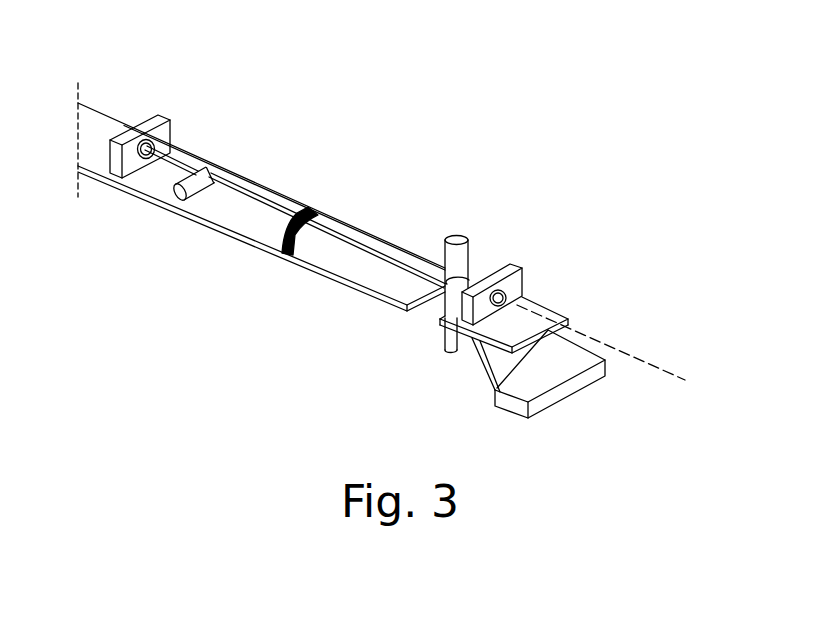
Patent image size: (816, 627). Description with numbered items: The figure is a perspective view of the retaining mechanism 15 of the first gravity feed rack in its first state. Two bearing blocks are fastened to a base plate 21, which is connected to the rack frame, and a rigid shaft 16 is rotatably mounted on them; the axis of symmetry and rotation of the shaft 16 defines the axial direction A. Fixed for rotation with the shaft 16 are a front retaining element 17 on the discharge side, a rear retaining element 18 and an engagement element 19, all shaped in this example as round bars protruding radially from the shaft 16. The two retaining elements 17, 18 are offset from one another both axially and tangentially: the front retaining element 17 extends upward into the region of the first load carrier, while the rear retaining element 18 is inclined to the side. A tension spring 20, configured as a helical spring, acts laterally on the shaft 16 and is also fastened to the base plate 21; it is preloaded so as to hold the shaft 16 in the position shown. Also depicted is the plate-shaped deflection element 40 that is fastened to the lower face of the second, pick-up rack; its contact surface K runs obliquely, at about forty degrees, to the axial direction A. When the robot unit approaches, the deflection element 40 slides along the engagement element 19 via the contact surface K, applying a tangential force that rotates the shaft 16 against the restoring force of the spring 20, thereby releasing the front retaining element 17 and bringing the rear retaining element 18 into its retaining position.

The retaining mechanism 15 is at (421, 186).
The shaft 16 is at (328, 240).
The front retaining element 17 is at (461, 235).
The rear retaining element 18 is at (188, 170).
The engagement element 19 is at (443, 347).
The tension spring 20 is at (302, 207).
The base plate 21 is at (373, 295).
The deflection element 40 is at (546, 375).
The axial direction A is at (623, 355).
The contact surface K is at (472, 371).